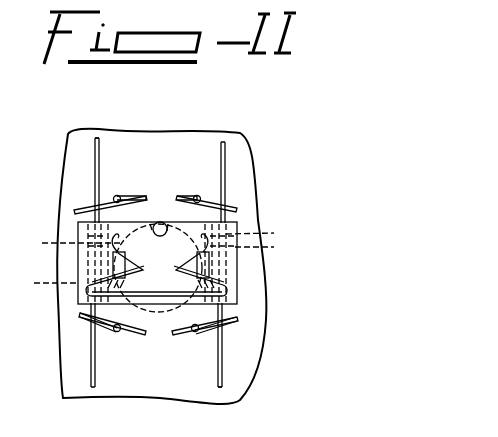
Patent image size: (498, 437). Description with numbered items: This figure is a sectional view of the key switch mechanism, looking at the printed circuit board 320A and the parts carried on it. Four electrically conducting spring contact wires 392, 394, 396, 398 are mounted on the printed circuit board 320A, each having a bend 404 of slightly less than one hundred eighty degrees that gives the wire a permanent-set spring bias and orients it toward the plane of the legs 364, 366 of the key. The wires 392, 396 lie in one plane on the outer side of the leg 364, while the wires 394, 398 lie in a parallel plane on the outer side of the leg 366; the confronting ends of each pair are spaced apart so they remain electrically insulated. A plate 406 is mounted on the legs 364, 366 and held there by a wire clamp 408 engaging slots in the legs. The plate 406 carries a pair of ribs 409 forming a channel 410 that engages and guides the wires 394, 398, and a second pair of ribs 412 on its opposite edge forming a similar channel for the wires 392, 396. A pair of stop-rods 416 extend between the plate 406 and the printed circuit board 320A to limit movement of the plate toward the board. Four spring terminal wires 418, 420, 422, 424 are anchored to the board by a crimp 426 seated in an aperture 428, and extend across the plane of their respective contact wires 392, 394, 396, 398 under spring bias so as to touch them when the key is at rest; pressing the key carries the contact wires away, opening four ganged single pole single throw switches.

The printed circuit board 320A is at (166, 398).
The spring contact wire 392 is at (95, 163).
The spring contact wire 394 is at (225, 165).
The spring contact wire 396 is at (91, 366).
The spring contact wire 398 is at (222, 359).
The bend 404 is at (97, 137).
The plate 406 is at (237, 292).
The wire clamp 408 is at (238, 300).
The ribs 409 is at (271, 231).
The channel 410 is at (158, 266).
The second pair of ribs 412 is at (61, 240).
The stop-rods 416 is at (168, 246).
The spring terminal wire 418 is at (76, 210).
The spring terminal wire 420 is at (236, 209).
The spring terminal wire 422 is at (79, 314).
The spring terminal wire 424 is at (237, 320).
The crimp 426 is at (118, 195).
The aperture 428 is at (119, 197).
The leg 364 is at (110, 266).
The leg 366 is at (211, 268).